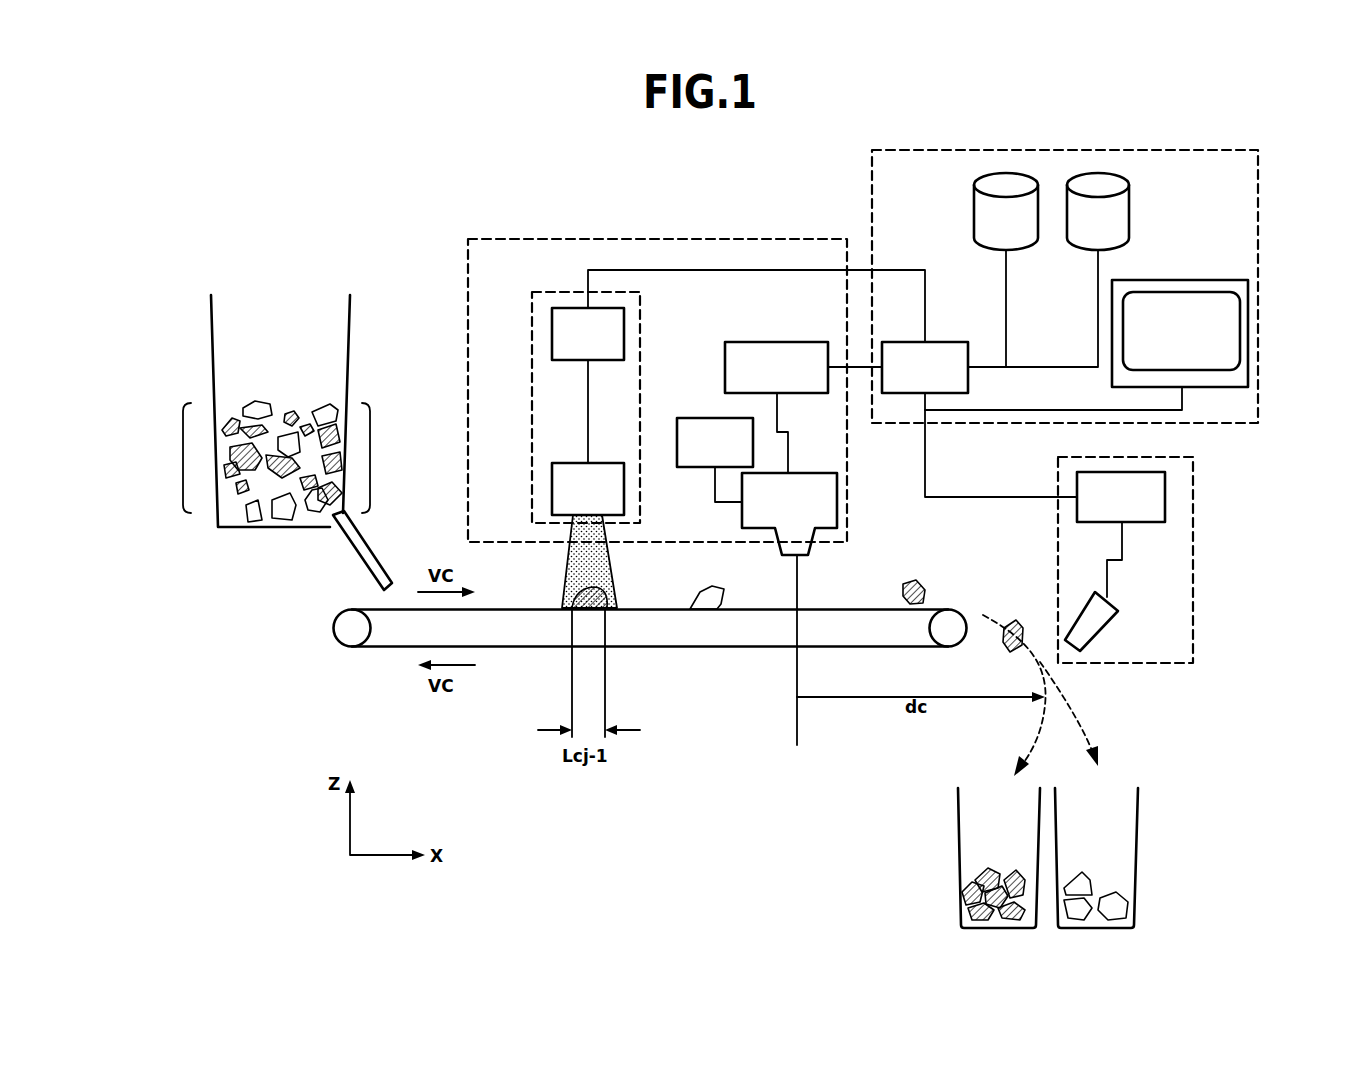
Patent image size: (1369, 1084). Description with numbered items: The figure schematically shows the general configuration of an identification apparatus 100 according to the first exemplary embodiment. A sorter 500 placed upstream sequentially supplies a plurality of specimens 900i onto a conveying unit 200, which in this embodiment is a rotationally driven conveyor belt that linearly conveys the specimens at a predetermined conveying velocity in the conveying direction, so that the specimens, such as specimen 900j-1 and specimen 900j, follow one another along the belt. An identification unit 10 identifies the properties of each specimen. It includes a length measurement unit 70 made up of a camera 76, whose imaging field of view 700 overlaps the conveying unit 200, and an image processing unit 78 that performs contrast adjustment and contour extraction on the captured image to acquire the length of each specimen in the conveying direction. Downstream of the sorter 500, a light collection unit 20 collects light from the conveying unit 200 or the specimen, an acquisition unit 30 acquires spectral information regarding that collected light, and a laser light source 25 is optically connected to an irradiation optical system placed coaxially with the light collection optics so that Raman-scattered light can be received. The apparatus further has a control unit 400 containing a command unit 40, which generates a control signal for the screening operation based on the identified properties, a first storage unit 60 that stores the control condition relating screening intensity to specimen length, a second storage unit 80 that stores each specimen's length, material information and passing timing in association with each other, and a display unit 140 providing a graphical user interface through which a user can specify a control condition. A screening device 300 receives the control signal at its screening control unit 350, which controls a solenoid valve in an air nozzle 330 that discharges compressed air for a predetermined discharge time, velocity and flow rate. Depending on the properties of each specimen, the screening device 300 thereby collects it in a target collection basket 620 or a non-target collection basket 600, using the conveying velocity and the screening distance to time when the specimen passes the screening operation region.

The identification apparatus 100 is at (222, 112).
The specimen 900i is at (370, 457).
The sorter 500 is at (211, 340).
The identification unit 10 is at (660, 239).
The length measurement unit 70 is at (640, 325).
The image processing unit 78 is at (552, 337).
The camera 76 is at (552, 490).
The imaging field of view 700 is at (565, 568).
The acquisition unit 30 is at (773, 340).
The laser light source 25 is at (695, 418).
The light collection unit 20 is at (815, 473).
The control unit 400 is at (1117, 150).
The command unit 40 is at (950, 342).
The first storage unit 60 is at (975, 212).
The second storage unit 80 is at (1130, 212).
The display unit 140 is at (1200, 292).
The screening device 300 is at (1193, 526).
The screening control unit 350 is at (1152, 522).
The air nozzle 330 is at (1098, 640).
The conveying unit 200 is at (352, 647).
The specimen 900j-1 is at (607, 600).
The specimen 900j is at (714, 580).
The target collection basket 620 is at (958, 815).
The non-target collection basket 600 is at (1138, 815).